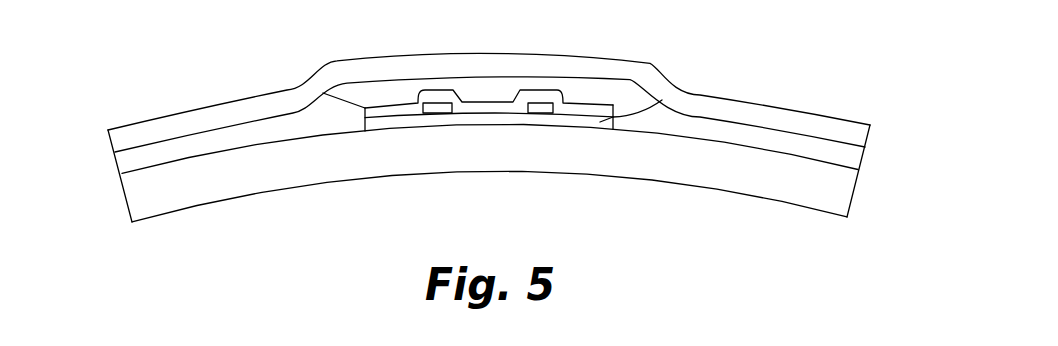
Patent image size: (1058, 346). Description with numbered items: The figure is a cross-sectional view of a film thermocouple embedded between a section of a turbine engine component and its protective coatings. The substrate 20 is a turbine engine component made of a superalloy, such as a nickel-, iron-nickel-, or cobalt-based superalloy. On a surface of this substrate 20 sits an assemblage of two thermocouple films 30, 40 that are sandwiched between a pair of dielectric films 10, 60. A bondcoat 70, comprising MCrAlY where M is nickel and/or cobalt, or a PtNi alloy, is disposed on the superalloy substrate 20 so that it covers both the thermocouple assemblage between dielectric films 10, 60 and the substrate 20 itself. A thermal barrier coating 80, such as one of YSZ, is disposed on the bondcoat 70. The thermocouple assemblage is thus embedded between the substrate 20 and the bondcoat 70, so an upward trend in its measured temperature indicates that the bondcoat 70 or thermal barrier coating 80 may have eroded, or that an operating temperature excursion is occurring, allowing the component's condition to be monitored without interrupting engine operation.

The dielectric film 10 is at (662, 100).
The substrate 20 is at (851, 199).
The thermocouple film 30 is at (433, 105).
The thermocouple film 40 is at (540, 109).
The dielectric film 60 is at (323, 93).
The bondcoat 70 is at (132, 164).
The thermal barrier coating 80 is at (118, 142).